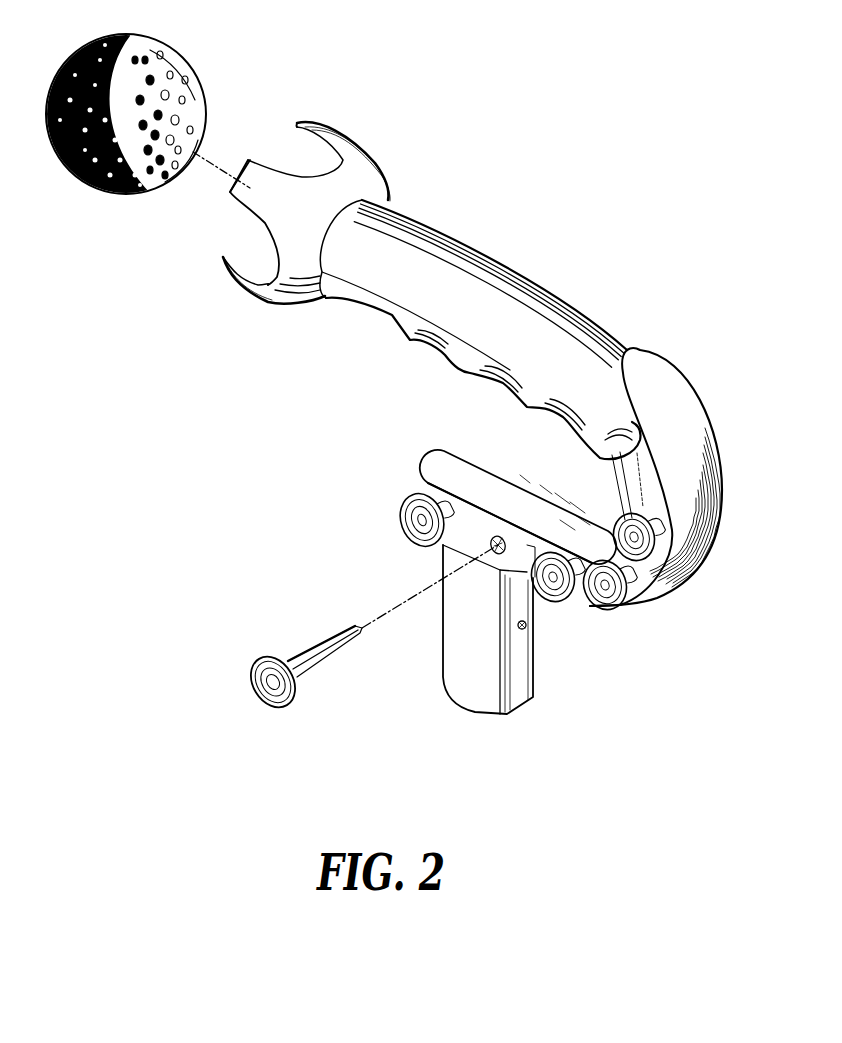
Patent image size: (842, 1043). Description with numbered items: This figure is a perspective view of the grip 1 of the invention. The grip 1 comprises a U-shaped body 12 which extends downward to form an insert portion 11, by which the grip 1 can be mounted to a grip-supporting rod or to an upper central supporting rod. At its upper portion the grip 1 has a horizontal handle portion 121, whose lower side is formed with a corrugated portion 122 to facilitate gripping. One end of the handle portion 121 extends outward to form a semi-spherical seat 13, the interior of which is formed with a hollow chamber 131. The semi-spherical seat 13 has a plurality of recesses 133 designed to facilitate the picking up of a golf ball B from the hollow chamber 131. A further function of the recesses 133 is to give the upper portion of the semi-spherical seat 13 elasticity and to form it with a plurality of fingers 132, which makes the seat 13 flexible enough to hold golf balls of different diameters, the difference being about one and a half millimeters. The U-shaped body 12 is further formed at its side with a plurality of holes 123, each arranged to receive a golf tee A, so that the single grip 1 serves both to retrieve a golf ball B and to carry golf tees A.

The grip 1 is at (565, 278).
The insert portion 11 is at (472, 677).
The U-shaped body 12 is at (672, 392).
The horizontal handle portion 121 is at (485, 260).
The corrugated portion 122 is at (410, 340).
The holes 123 is at (490, 547).
The semi-spherical seat 13 is at (363, 145).
The hollow chamber 131 is at (277, 147).
The fingers 132 is at (250, 188).
The recesses 133 is at (253, 263).
The golf tee A is at (263, 687).
The golf ball B is at (97, 193).